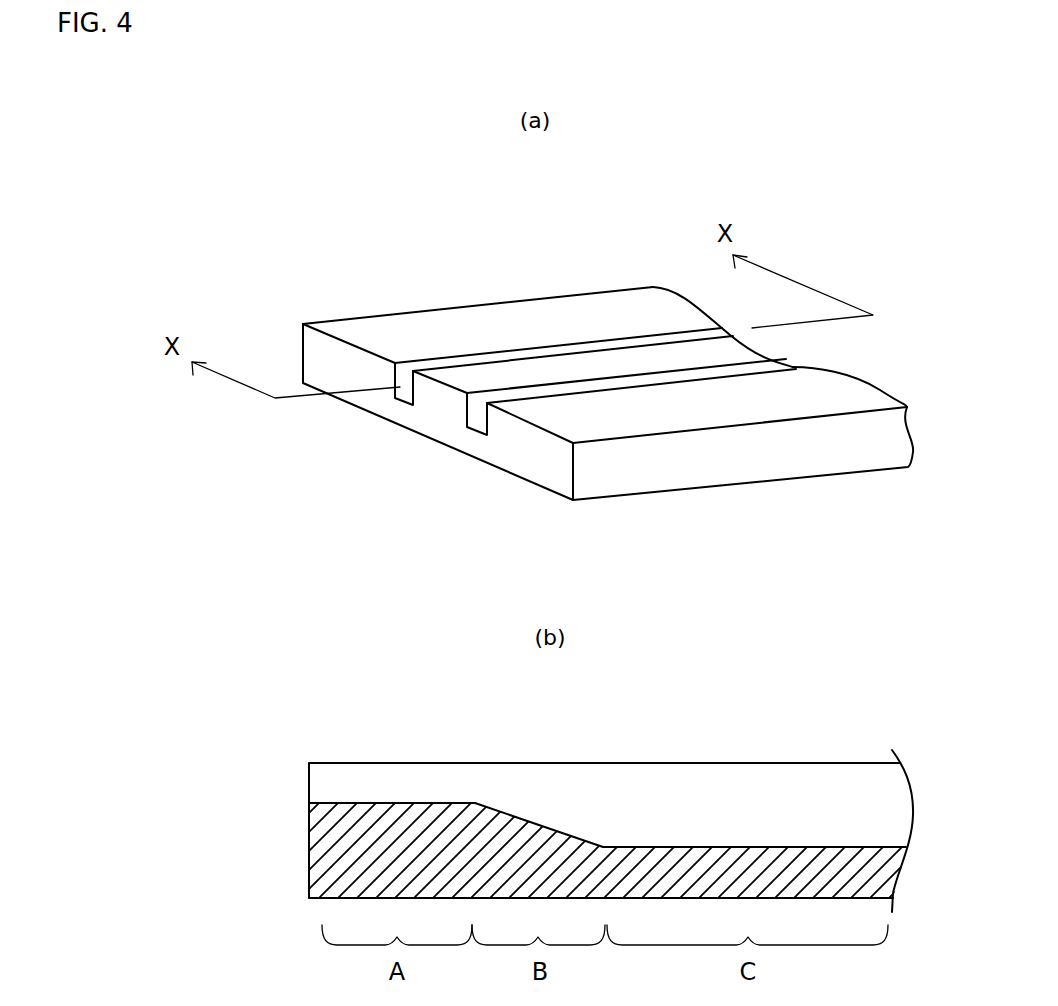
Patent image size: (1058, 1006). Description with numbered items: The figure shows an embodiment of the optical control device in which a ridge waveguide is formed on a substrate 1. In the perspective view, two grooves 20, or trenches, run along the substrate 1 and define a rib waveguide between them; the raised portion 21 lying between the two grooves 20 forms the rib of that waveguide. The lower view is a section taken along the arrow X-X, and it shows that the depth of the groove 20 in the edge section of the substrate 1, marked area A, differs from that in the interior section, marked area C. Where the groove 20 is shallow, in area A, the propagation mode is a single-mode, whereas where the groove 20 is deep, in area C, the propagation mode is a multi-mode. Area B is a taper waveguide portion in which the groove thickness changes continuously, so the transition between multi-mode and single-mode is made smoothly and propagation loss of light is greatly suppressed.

The substrate 1 is at (408, 323).
The groove 20 is at (527, 352).
The protrusion 21 is at (445, 413).